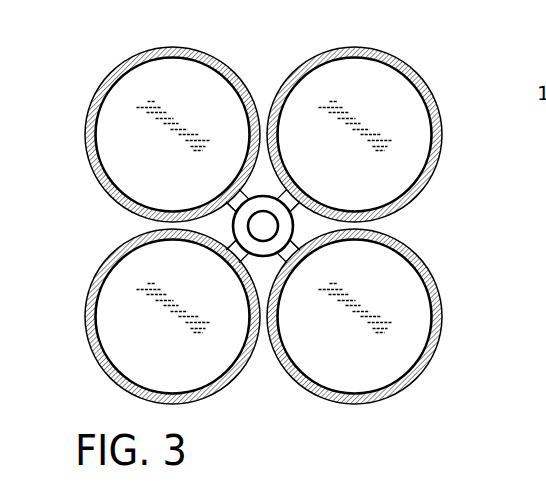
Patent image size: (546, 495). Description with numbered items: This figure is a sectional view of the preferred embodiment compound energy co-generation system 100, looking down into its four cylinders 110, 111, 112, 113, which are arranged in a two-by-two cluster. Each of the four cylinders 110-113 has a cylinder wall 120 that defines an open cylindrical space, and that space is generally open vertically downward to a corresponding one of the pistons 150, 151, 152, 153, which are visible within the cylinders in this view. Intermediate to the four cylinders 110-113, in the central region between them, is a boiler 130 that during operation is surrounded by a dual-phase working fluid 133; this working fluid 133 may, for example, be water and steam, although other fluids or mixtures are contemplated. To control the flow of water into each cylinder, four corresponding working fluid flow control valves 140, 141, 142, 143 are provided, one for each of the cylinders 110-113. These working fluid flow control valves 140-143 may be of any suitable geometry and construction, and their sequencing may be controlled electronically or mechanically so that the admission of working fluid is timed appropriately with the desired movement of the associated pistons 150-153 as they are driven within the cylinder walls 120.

The compound energy co-generation system 100 is at (412, 50).
The cylinder 110 is at (106, 377).
The cylinder 111 is at (441, 290).
The cylinder 112 is at (438, 99).
The cylinder 113 is at (99, 84).
The cylinder wall 120 is at (120, 60).
The boiler 130 is at (345, 221).
The dual-phase working fluid 133 is at (266, 257).
The working fluid flow control valve 140 is at (268, 243).
The working fluid flow control valve 141 is at (278, 227).
The working fluid flow control valve 142 is at (267, 197).
The working fluid flow control valve 143 is at (168, 227).
The piston 150 is at (126, 293).
The piston 151 is at (420, 323).
The piston 152 is at (408, 128).
The piston 153 is at (125, 176).